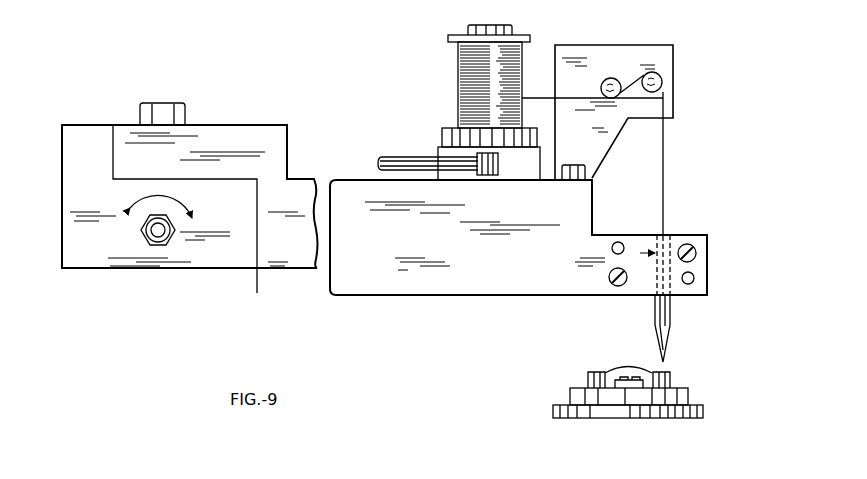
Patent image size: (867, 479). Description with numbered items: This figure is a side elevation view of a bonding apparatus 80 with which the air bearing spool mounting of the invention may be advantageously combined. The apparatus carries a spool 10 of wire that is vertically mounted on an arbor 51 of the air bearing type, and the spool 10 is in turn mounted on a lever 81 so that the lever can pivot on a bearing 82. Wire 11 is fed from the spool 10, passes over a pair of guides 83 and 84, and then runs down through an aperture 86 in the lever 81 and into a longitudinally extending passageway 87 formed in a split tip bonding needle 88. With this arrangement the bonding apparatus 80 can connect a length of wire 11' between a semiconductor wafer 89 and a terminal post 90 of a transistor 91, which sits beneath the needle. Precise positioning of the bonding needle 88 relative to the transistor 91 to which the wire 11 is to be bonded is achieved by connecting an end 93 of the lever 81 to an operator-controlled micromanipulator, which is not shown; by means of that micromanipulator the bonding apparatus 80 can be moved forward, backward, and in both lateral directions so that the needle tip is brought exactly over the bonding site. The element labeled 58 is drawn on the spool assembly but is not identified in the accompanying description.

The spool 10 is at (466, 93).
The wire 11 is at (615, 144).
The wire 11' is at (632, 355).
The arbor 51 is at (503, 27).
The lever 58 is at (405, 157).
The bonding apparatus 80 is at (389, 137).
The lever 81 is at (400, 296).
The bearing 82 is at (146, 232).
The guide 83 is at (612, 78).
The guide 84 is at (662, 81).
The aperture 86 is at (672, 248).
The passageway 87 is at (660, 243).
The split tip bonding needle 88 is at (668, 356).
The semiconductor wafer 89 is at (633, 380).
The terminal post 90 is at (672, 384).
The transistor 91 is at (610, 377).
The end 93 is at (62, 155).